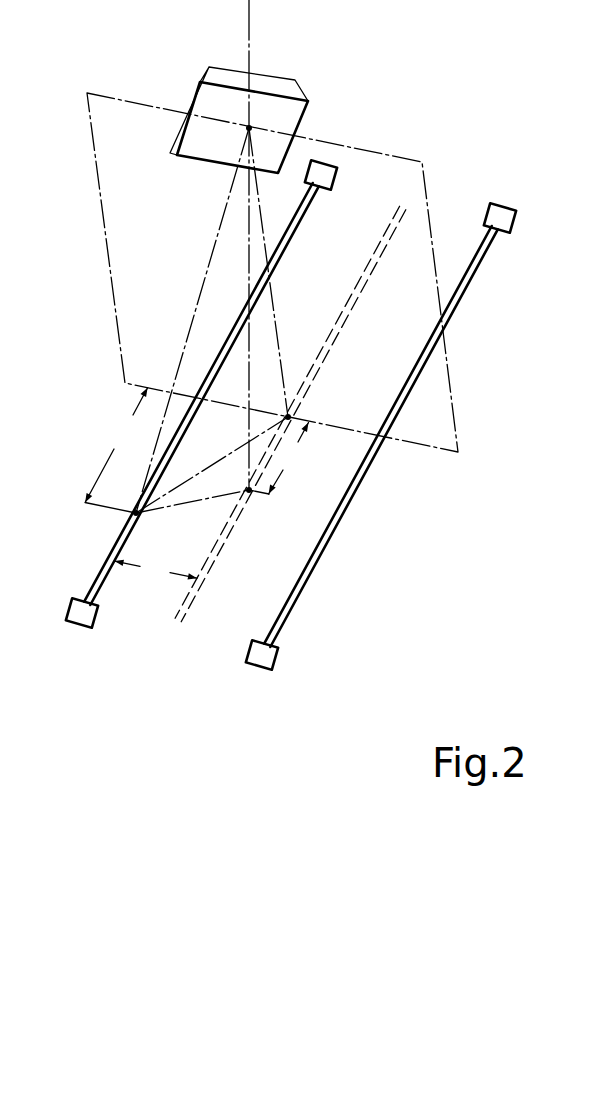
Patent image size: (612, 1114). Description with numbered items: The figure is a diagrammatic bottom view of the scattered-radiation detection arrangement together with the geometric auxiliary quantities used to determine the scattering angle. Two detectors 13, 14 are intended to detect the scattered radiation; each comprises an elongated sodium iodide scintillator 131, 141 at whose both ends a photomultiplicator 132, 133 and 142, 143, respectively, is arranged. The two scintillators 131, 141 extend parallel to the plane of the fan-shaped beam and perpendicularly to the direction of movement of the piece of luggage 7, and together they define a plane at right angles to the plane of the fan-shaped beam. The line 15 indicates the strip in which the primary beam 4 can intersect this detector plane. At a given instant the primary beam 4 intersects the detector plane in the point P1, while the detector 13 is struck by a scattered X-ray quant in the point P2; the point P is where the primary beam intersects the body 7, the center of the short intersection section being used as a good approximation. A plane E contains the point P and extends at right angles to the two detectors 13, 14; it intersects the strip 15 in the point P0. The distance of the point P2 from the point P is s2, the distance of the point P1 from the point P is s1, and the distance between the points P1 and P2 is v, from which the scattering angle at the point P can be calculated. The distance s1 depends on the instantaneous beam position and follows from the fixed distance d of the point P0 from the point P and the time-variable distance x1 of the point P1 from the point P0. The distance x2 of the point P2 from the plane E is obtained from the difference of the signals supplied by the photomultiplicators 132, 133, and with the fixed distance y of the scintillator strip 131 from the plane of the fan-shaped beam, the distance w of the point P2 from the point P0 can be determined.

The primary beam 4 is at (247, 35).
The piece of luggage 7 is at (272, 74).
The plane E is at (95, 168).
The point P is at (251, 126).
The distance s1 is at (249, 366).
The distance s2 is at (203, 278).
The distance d is at (278, 340).
The distance w is at (200, 470).
The distance v is at (194, 502).
The point PO P0 is at (298, 412).
The point P1 is at (251, 497).
The point P2 is at (130, 515).
The distance x1 is at (289, 459).
The distance x2 is at (116, 450).
The distance y is at (156, 568).
The detector 13 is at (199, 387).
The sodium iodide scintillator 131 is at (95, 577).
The photomultiplicator 132 is at (91, 620).
The photomultiplicator 133 is at (327, 164).
The detector 14 is at (387, 442).
The sodium iodide scintillator 141 is at (331, 540).
The photomultiplicator 142 is at (279, 662).
The photomultiplicator 143 is at (515, 222).
The line 15 is at (361, 279).